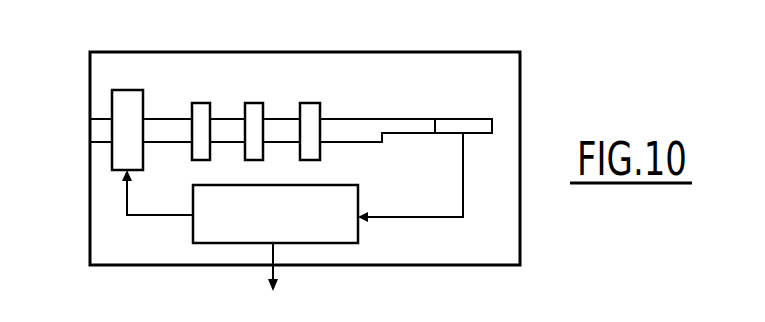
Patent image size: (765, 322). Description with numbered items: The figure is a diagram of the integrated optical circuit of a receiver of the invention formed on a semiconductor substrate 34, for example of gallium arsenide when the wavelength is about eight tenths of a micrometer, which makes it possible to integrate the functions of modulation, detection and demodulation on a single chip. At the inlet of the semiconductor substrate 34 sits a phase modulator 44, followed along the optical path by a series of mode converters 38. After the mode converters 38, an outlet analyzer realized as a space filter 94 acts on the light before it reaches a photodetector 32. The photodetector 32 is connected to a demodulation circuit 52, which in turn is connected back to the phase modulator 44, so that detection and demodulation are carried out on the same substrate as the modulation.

The semiconductor substrate 34 is at (108, 70).
The phase modulator 44 is at (128, 97).
The mode converters 38 is at (222, 69).
The photodetector 32 is at (452, 127).
The space filter 94 is at (382, 135).
The demodulation circuit 52 is at (292, 224).